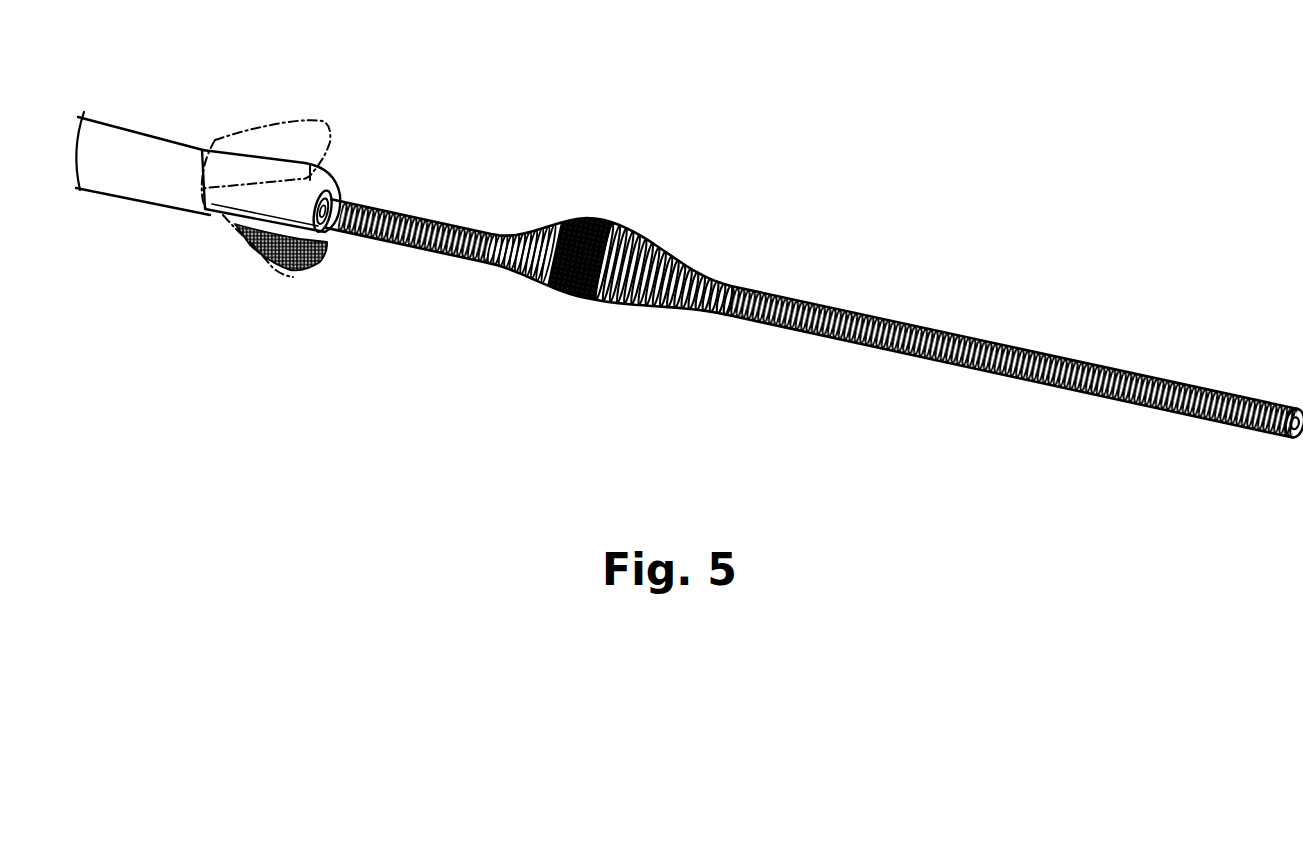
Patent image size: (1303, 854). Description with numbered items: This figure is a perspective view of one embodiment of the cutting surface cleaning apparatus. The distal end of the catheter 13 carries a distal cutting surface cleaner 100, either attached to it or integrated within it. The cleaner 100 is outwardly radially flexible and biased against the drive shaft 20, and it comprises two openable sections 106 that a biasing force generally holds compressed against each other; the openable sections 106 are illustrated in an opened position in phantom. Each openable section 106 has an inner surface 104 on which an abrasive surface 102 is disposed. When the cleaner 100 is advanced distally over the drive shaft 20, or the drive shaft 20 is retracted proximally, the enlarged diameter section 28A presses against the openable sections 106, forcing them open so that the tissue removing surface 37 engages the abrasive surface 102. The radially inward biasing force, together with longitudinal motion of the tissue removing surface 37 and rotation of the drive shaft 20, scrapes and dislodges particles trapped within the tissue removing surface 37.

The catheter 13 is at (130, 147).
The drive shaft 20 is at (806, 286).
The enlarged diameter section 28A is at (550, 227).
The tissue removing surface 37 is at (613, 213).
The distal cutting surface cleaner 100 is at (324, 186).
The abrasive surface 102 is at (317, 273).
The inner surface 104 is at (340, 147).
The openable sections 106 is at (277, 138).